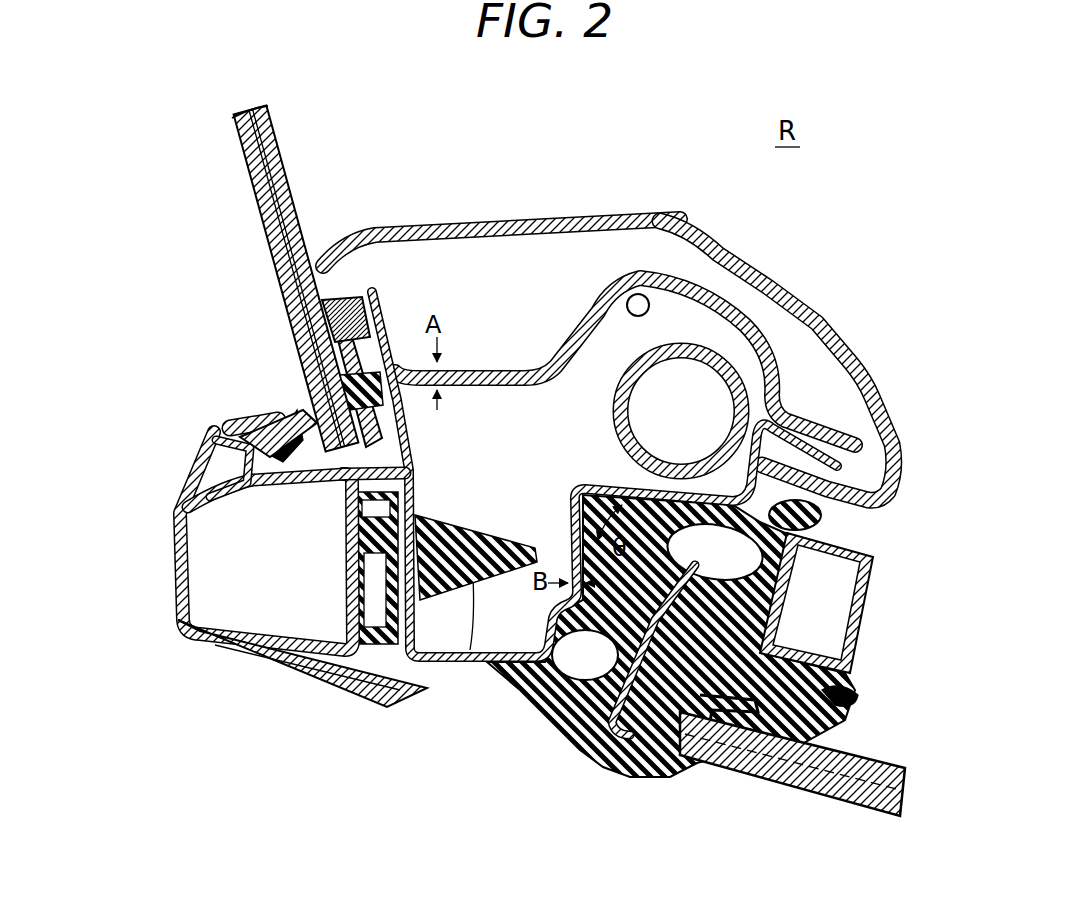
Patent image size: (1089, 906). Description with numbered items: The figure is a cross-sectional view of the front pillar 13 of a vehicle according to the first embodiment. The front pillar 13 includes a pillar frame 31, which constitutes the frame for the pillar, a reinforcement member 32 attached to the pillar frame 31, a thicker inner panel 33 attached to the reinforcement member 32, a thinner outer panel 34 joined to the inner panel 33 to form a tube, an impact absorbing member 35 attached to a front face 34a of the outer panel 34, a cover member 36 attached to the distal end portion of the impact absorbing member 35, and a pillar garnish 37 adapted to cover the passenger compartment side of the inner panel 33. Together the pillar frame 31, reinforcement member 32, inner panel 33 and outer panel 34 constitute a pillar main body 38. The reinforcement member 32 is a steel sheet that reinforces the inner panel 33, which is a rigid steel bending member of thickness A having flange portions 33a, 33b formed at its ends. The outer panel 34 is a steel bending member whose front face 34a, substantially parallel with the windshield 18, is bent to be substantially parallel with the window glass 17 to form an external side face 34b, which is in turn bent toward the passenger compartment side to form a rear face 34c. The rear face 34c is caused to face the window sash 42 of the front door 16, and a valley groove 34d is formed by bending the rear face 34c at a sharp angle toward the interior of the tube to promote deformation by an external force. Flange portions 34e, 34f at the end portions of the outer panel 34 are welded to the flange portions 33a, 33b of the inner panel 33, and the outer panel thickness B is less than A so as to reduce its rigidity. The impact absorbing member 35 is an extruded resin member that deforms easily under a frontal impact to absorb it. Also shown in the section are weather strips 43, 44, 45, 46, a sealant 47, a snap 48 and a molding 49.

The front pillar 13 is at (825, 218).
The front door 16 is at (850, 740).
The window glass 17 is at (770, 780).
The windshield 18 is at (247, 172).
The pillar frame 31 is at (592, 307).
The reinforcement member 32 is at (620, 363).
The inner panel 33 is at (497, 362).
The flange portion 33a is at (398, 300).
The flange portion 33b is at (807, 423).
The outer panel 34 is at (452, 670).
The front face 34a is at (293, 420).
The external side face 34b is at (437, 662).
The rear face 34c is at (577, 730).
The valley groove 34d is at (590, 483).
The flange portion 34e is at (352, 292).
The flange portion 34f is at (867, 487).
The impact absorbing member 35 is at (203, 453).
The cover member 36 is at (173, 577).
The pillar garnish 37 is at (873, 353).
The pillar main body 38 is at (782, 350).
The window sash 42 is at (880, 607).
The weather strip 43 is at (300, 360).
The weather strip 44 is at (553, 720).
The weather strip 45 is at (860, 697).
The weather strip 46 is at (818, 508).
The sealant 47 is at (318, 275).
The snap 48 is at (480, 660).
The molding 49 is at (227, 417).